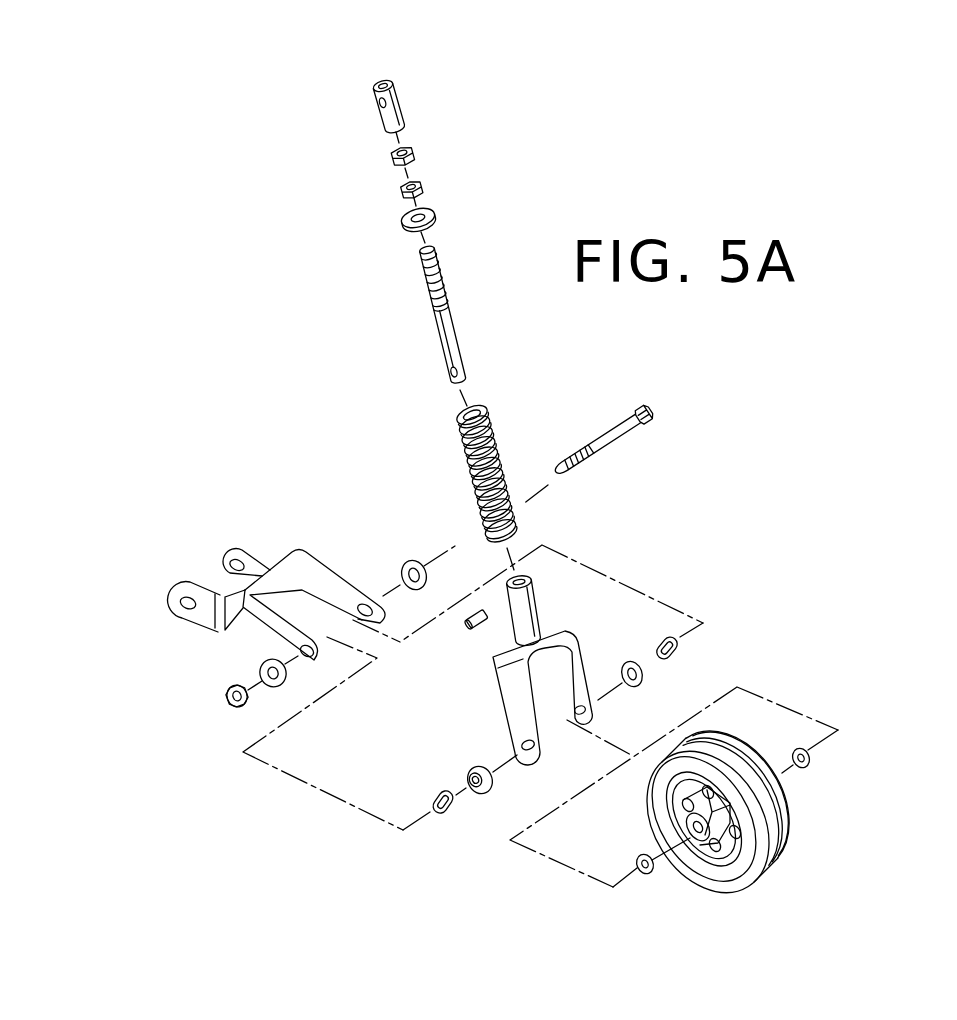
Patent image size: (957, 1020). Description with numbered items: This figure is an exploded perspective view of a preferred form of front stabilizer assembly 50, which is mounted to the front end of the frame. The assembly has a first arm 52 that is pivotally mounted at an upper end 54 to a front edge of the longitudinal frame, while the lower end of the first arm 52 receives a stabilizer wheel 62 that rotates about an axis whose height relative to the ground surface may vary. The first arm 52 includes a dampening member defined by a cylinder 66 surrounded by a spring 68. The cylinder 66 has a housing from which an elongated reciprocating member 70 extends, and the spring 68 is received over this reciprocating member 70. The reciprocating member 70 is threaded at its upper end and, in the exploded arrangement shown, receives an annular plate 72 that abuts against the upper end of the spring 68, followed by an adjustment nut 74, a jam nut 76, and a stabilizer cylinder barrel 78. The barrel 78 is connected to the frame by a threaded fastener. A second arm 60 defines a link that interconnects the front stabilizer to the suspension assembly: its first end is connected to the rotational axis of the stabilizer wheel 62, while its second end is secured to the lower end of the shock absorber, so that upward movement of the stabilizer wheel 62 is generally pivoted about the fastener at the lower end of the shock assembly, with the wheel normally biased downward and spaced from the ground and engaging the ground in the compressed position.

The front stabilizer assembly 50 is at (553, 403).
The first arm 52 is at (453, 270).
The upper end 54 is at (373, 83).
The second arm 60 is at (330, 563).
The stabilizer wheel 62 is at (783, 815).
The cylinder 66 is at (467, 363).
The spring 68 is at (460, 437).
The reciprocating member 70 is at (425, 288).
The annular plate 72 is at (403, 217).
The adjustment nut 74 is at (425, 185).
The jam nut 76 is at (390, 152).
The stabilizer cylinder barrel 78 is at (405, 110).